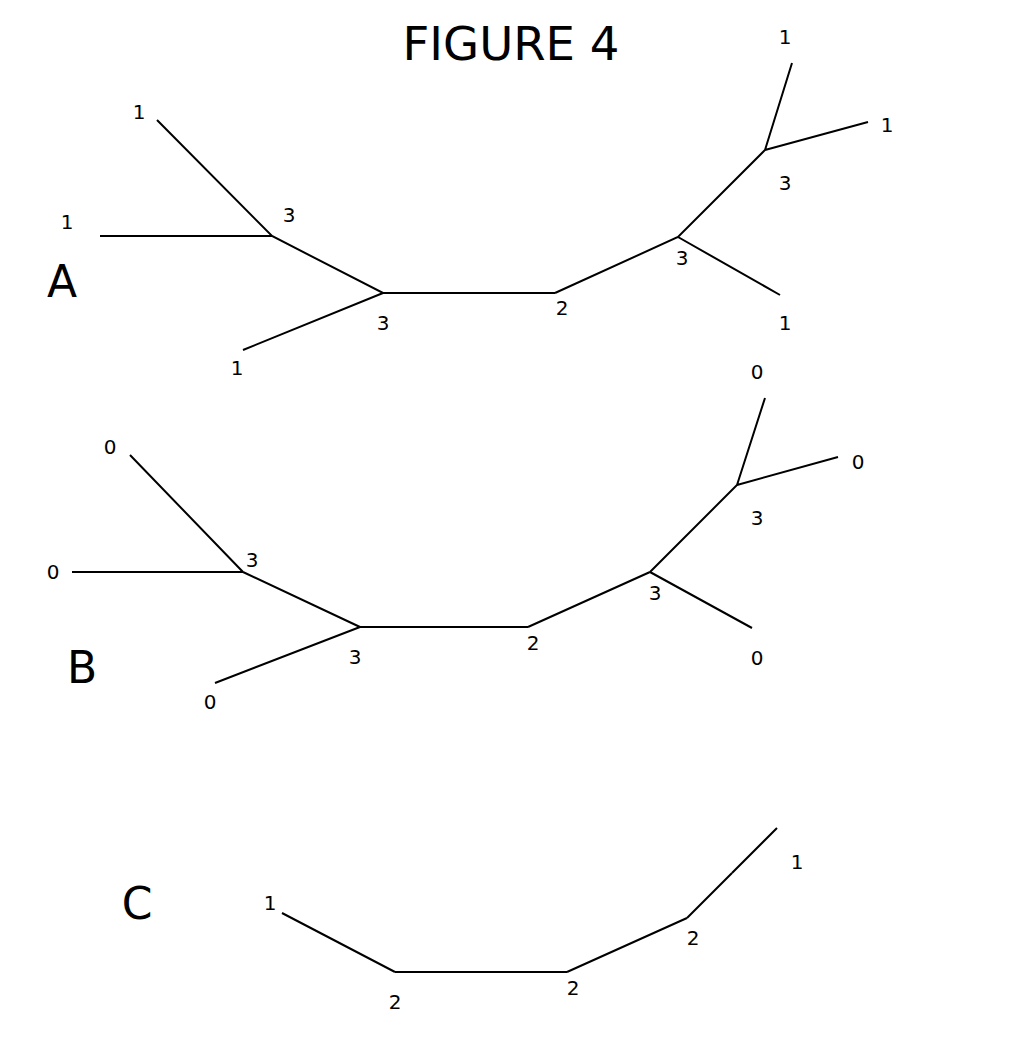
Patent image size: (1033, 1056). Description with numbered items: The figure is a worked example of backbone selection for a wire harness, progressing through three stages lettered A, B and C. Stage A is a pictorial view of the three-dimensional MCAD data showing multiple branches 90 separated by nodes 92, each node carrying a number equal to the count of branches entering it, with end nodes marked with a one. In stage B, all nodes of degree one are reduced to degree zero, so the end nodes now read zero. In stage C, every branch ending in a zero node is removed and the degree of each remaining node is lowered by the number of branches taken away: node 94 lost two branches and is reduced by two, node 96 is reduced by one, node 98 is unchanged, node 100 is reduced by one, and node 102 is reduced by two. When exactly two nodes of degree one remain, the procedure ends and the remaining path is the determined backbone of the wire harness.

The branches 90 is at (201, 139).
The nodes 92 is at (547, 276).
The node 94 is at (729, 469).
The node 96 is at (644, 555).
The node 98 is at (522, 610).
The node 100 is at (354, 610).
The node 102 is at (226, 577).